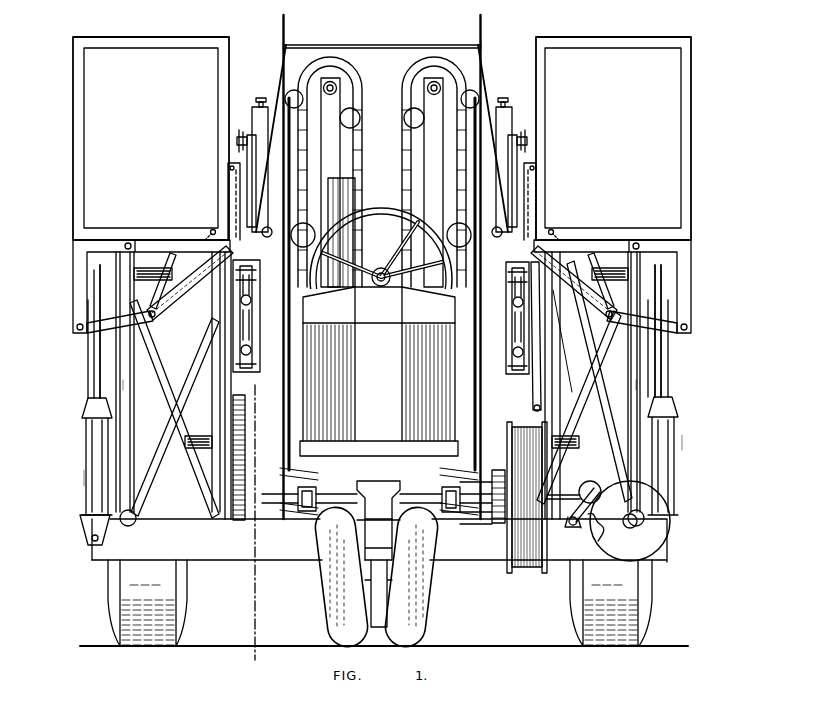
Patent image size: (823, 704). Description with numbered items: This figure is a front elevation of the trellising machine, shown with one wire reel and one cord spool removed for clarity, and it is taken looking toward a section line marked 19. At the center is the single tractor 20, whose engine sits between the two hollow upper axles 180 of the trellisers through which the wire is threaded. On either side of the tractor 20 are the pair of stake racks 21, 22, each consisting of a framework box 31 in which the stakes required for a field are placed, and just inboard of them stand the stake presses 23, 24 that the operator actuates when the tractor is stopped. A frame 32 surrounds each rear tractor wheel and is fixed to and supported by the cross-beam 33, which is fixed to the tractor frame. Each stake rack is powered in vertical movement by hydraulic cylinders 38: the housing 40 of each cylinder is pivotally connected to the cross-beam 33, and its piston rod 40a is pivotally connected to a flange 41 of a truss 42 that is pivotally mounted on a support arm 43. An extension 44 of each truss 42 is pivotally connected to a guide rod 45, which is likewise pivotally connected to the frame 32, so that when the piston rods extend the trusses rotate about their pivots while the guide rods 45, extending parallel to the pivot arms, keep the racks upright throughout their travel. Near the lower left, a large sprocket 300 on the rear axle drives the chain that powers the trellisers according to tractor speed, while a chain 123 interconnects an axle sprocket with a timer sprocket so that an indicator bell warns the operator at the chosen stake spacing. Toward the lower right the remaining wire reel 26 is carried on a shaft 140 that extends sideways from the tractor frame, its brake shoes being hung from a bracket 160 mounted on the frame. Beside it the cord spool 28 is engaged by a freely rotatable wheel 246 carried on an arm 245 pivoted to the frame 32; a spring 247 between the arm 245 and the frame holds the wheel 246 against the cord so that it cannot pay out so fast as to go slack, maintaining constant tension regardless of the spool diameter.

The section line 19 is at (233, 384).
The tractor 20 is at (387, 367).
The stake rack 21 is at (153, 140).
The stake rack 22 is at (620, 153).
The stake press 23 is at (258, 95).
The stake press 24 is at (506, 95).
The wire spool 26 is at (526, 580).
The cord spool 28 is at (657, 543).
The framework box 31 is at (78, 128).
The frame 32 is at (108, 367).
The cross-beam 33 is at (296, 552).
The hydraulic cylinder 38 is at (82, 478).
The housing 40 is at (98, 445).
The piston rod 40a is at (96, 360).
The flange 41 is at (90, 302).
The truss 42 is at (84, 248).
The support arm 43 is at (123, 385).
The extension 44 is at (232, 168).
The guide rod 45 is at (240, 195).
The chain 123 is at (566, 349).
The shaft 140 is at (298, 500).
The bracket 160 is at (500, 540).
The hollow upper axle 180 is at (430, 80).
The arm 245 is at (579, 526).
The wheel 246 is at (600, 494).
The spring 247 is at (598, 517).
The sprocket 300 is at (245, 462).